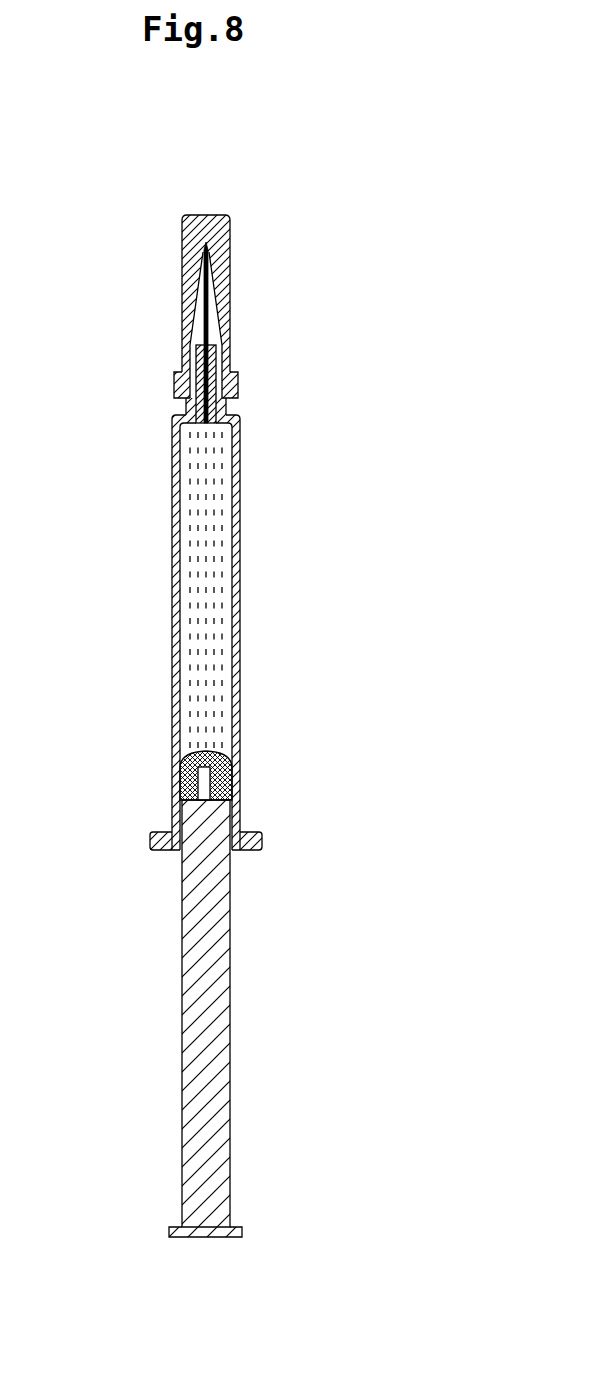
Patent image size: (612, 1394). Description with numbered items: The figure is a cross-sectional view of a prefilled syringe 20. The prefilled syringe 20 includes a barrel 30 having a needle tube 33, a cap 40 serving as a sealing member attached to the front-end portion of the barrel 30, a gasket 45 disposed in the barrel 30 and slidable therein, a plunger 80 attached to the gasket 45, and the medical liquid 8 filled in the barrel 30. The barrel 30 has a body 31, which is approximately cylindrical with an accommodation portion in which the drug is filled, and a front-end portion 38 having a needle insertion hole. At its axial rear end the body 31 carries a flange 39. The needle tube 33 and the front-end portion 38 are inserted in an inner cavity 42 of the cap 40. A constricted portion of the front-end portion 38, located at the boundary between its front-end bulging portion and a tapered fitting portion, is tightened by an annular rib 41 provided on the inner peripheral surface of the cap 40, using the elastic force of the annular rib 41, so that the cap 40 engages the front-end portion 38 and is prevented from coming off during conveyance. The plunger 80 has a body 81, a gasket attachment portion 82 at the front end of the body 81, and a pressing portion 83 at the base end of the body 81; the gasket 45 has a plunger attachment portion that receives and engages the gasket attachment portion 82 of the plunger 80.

The medical liquid 8 is at (197, 655).
The prefilled syringe 20 is at (303, 461).
The barrel 30 is at (245, 653).
The body 31 is at (178, 600).
The needle tube 33 is at (182, 320).
The front-end portion 38 is at (182, 408).
The flange 39 is at (260, 847).
The cap 40 is at (239, 252).
The annular rib 41 is at (182, 362).
The inner cavity 42 is at (221, 331).
The gasket 45 is at (207, 752).
The plunger 80 is at (237, 1015).
The body 81 is at (222, 1107).
The gasket attachment portion 82 is at (230, 788).
The pressing portion 83 is at (240, 1227).